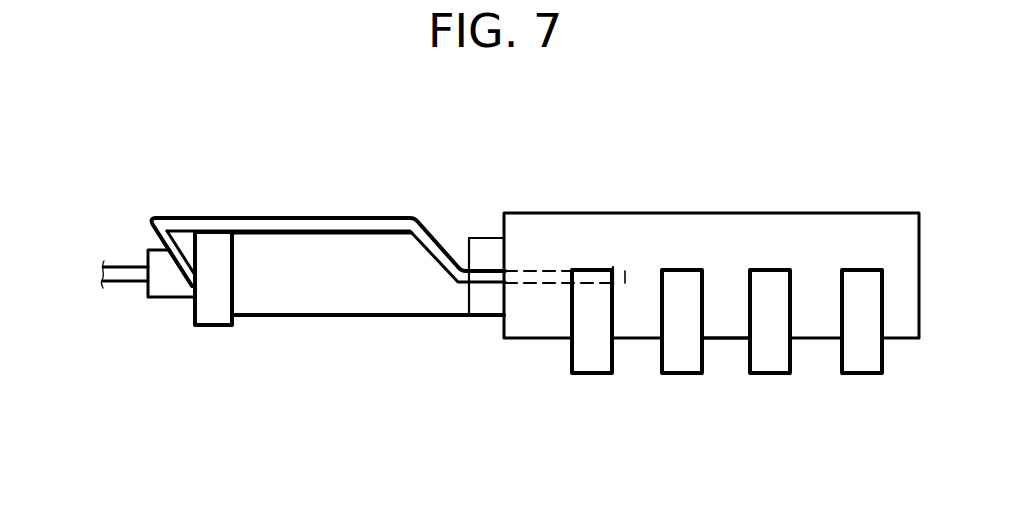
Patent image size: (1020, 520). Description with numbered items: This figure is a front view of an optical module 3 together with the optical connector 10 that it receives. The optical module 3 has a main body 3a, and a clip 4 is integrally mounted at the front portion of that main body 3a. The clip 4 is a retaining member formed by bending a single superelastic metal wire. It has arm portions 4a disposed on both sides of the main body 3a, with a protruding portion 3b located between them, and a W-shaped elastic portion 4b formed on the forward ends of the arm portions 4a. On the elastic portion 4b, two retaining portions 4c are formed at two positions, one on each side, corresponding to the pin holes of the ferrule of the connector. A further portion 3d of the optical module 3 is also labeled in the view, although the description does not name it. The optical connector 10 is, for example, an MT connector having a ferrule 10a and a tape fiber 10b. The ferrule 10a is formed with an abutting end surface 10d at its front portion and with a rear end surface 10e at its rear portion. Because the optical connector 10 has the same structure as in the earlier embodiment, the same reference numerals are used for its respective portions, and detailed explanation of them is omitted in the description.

The optical module 3 is at (690, 274).
The main body 3a is at (815, 300).
The protruding portion 3b is at (486, 246).
The pin spacing region 3d is at (777, 357).
The clip 4 is at (286, 248).
The arm portions 4a is at (338, 217).
The elastic portion 4b is at (160, 238).
The retaining portions 4c is at (188, 280).
The optical connector 10 is at (295, 335).
The ferrule 10a is at (330, 293).
The tape fiber 10b is at (123, 288).
The abutting end surface 10d is at (472, 292).
The rear end surface 10e is at (194, 310).